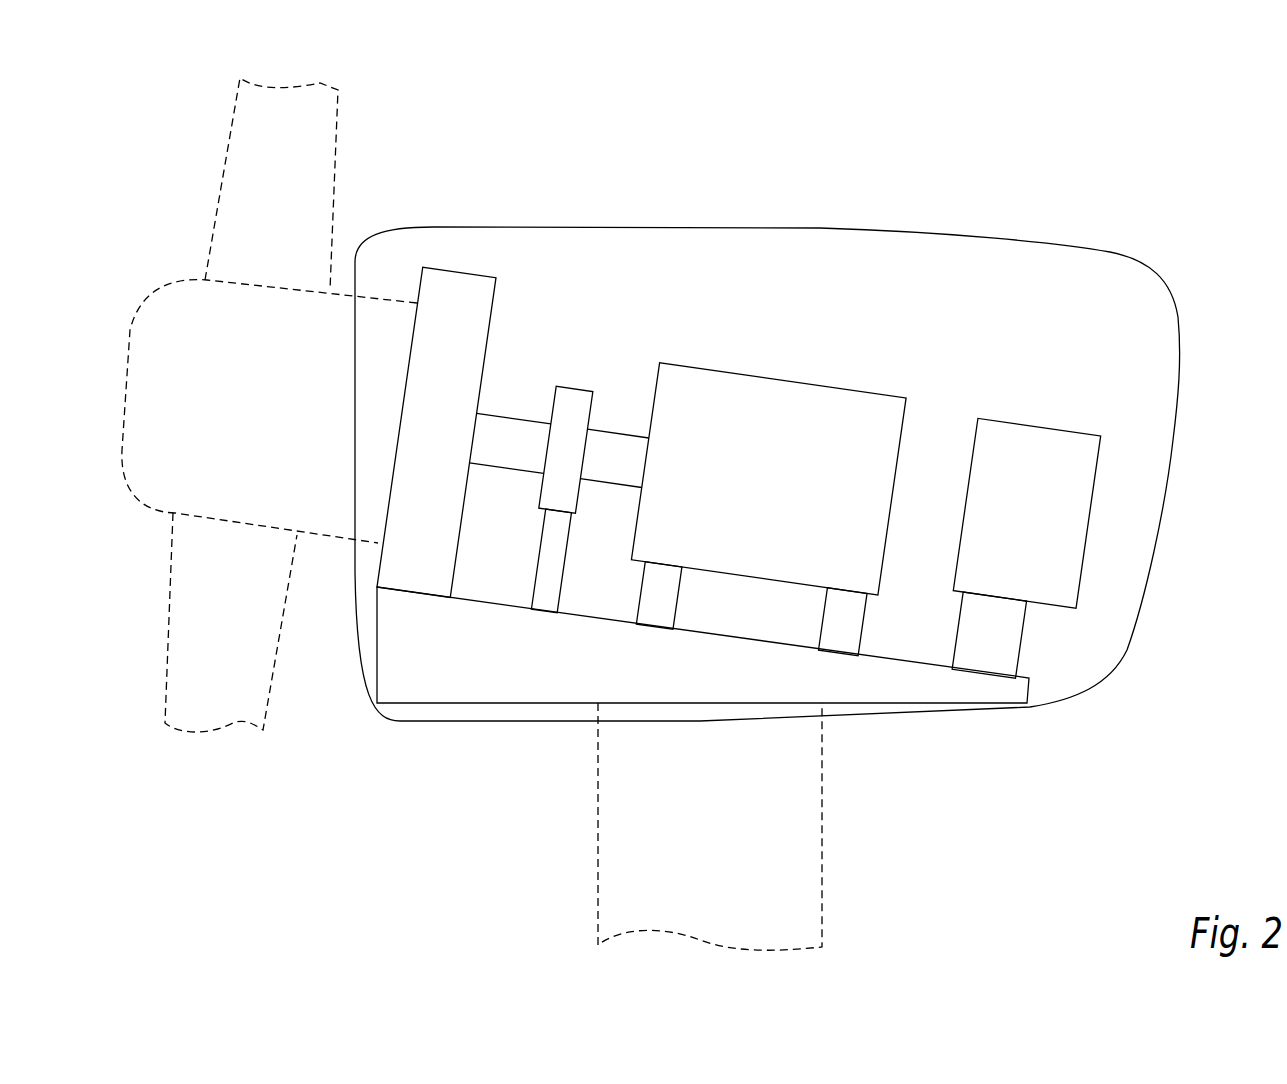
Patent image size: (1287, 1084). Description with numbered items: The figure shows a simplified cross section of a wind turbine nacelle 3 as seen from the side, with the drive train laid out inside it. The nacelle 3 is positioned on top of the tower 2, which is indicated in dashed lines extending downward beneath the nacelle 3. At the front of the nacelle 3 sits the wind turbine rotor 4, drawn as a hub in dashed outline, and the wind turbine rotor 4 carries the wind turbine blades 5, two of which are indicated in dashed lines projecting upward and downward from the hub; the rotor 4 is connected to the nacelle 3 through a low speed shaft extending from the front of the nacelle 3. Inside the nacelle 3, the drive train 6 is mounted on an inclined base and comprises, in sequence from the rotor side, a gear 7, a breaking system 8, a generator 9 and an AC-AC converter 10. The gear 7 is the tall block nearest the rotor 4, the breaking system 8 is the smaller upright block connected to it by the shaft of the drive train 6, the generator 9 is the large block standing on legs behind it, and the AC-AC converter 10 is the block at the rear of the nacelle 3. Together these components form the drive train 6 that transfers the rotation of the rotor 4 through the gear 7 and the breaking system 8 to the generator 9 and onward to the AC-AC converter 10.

The tower 2 is at (740, 875).
The wind turbine nacelle 3 is at (1218, 261).
The wind turbine rotor 4 is at (182, 355).
The wind turbine blade 5 is at (298, 175).
The drive train 6 is at (600, 462).
The gear 7 is at (456, 305).
The breaking system 8 is at (573, 408).
The generator 9 is at (733, 423).
The AC-AC converter 10 is at (1047, 474).